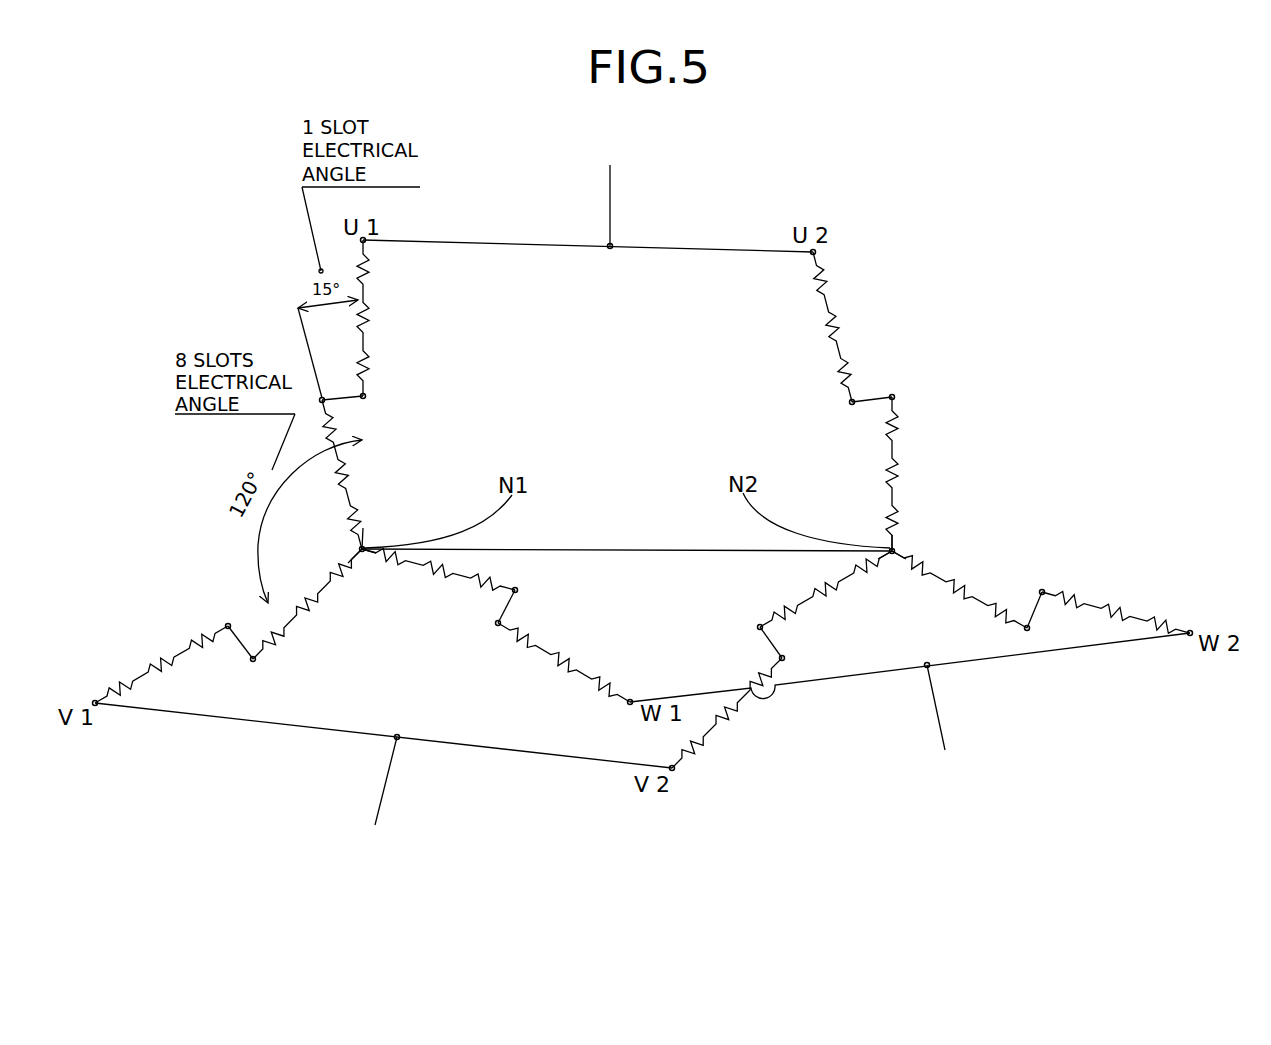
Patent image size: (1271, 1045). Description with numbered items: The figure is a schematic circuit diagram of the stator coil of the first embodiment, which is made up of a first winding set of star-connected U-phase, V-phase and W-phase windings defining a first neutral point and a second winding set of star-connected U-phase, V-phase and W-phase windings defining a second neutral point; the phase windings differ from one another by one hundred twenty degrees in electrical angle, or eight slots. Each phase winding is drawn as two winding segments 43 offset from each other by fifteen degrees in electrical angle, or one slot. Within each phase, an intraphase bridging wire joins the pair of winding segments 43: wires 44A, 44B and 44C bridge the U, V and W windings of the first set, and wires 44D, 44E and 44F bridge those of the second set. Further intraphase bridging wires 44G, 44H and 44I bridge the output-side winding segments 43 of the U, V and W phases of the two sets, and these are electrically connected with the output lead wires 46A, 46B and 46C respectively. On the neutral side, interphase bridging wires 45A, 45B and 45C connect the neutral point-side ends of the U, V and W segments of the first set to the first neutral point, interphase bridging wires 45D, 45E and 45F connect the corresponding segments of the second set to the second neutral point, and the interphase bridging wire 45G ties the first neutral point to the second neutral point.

The winding segment 43 is at (381, 318).
The intraphase bridging wire 44A is at (342, 388).
The intraphase bridging wire 44B is at (236, 644).
The intraphase bridging wire 44C is at (514, 607).
The intraphase bridging wire 44D is at (872, 394).
The intraphase bridging wire 44E is at (761, 645).
The intraphase bridging wire 44F is at (1031, 599).
The intraphase bridging wire 44G is at (563, 254).
The intraphase bridging wire 44H is at (307, 733).
The intraphase bridging wire 44I is at (863, 681).
The interphase bridging wire 45A is at (366, 529).
The interphase bridging wire 45B is at (352, 551).
The interphase bridging wire 45C is at (373, 558).
The interphase bridging wire 45D is at (882, 536).
The interphase bridging wire 45E is at (883, 563).
The interphase bridging wire 45F is at (909, 554).
The interphase bridging wire 45G is at (595, 541).
The output lead wire 46A is at (604, 191).
The output lead wire 46B is at (391, 778).
The output lead wire 46C is at (946, 719).